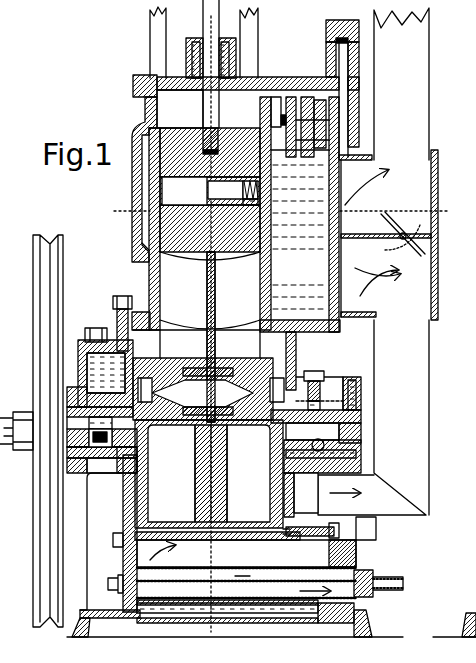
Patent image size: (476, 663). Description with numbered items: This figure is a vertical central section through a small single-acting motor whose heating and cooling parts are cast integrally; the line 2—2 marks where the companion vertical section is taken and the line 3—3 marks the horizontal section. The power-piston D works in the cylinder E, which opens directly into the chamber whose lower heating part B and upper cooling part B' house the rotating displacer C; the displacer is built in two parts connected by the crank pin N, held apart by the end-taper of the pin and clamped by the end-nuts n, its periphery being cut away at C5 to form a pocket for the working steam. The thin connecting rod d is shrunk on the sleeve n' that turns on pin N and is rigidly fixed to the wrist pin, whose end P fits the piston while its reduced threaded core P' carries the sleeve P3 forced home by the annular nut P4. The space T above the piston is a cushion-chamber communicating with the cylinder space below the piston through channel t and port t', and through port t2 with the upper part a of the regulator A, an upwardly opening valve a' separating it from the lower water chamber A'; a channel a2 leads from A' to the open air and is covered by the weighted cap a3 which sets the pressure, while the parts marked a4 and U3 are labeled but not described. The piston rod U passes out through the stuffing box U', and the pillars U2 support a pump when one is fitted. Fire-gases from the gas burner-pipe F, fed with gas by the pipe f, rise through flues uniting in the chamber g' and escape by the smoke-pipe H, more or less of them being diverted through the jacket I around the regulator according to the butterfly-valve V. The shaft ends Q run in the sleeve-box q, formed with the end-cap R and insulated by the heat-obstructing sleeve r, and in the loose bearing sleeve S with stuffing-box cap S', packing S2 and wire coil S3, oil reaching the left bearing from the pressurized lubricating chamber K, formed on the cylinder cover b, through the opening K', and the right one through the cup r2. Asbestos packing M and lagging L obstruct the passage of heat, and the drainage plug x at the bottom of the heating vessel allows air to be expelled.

The section line 2— 2 is at (207, 323).
The section line 3— 3 is at (283, 210).
The third pipe U3 is at (156, 42).
The pillars U2 is at (252, 43).
The piston rod U is at (211, 77).
The stuffing box U' is at (203, 58).
The cushion-chamber T is at (180, 109).
The channel t is at (136, 179).
The port t' is at (132, 246).
The port t2 is at (271, 105).
The working cylinder E is at (149, 282).
The power-piston D is at (186, 266).
The connecting rod d is at (215, 278).
The wrist-pin end P is at (184, 191).
The wrist-pin core P' is at (225, 190).
The sleeve P3 is at (250, 178).
The annular nut P4 is at (249, 208).
The upper chamber of regulator a is at (288, 124).
The valve a' is at (301, 132).
The channel a2 is at (338, 73).
The weighted cap a3 is at (328, 81).
The valve seat a4 is at (335, 44).
The lower regulator chamber A' is at (300, 214).
The regulating vessel A is at (329, 268).
The smoke-pipe H is at (373, 261).
The jacket I is at (388, 235).
The butterfly-valve V is at (403, 234).
The lubricating-chamber K is at (99, 368).
The opening K' is at (133, 323).
The bearing sleeve S is at (99, 446).
The stuffing-box cap S' is at (74, 421).
The packing S2 is at (96, 423).
The corrugated wire coil S3 is at (100, 438).
The crank pin N is at (203, 337).
The end-nuts n is at (211, 385).
The sleeve n' is at (217, 393).
The cooling part of chamber B' is at (210, 342).
The cut-away portion of displacer C5 is at (250, 343).
The end-cap R is at (316, 410).
The packing M is at (352, 389).
The lubricating cup r2 is at (320, 388).
The heat-obstructing sleeve r is at (352, 411).
The shaft end Q is at (233, 440).
The sleeve-box q is at (322, 440).
The rotating displacer C is at (148, 468).
The heating part of chamber B is at (218, 473).
The cylinder cover b is at (123, 484).
The lagging L is at (290, 636).
The chamber g' is at (322, 478).
The drainage plug x is at (340, 528).
The gas burner-pipe F is at (250, 572).
The gas pipe f is at (386, 582).